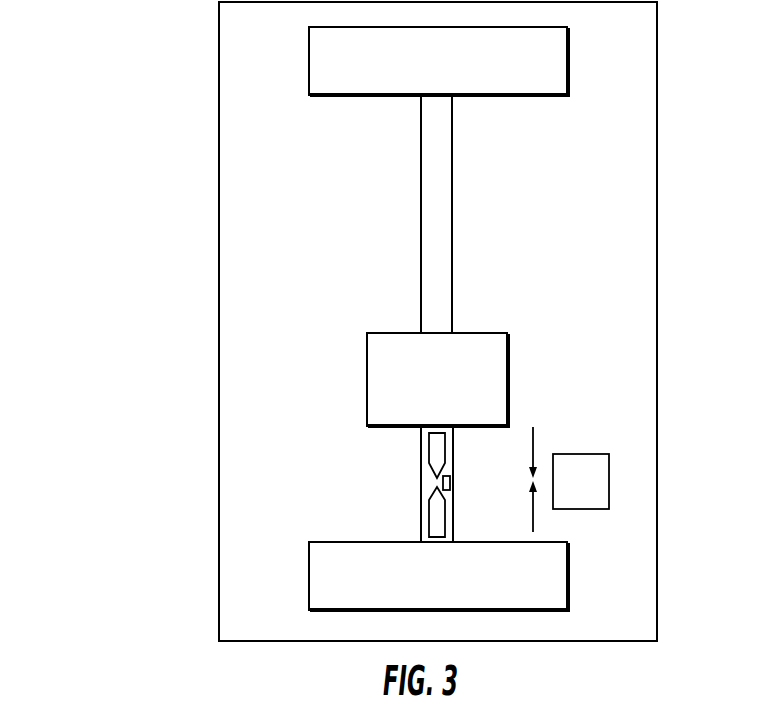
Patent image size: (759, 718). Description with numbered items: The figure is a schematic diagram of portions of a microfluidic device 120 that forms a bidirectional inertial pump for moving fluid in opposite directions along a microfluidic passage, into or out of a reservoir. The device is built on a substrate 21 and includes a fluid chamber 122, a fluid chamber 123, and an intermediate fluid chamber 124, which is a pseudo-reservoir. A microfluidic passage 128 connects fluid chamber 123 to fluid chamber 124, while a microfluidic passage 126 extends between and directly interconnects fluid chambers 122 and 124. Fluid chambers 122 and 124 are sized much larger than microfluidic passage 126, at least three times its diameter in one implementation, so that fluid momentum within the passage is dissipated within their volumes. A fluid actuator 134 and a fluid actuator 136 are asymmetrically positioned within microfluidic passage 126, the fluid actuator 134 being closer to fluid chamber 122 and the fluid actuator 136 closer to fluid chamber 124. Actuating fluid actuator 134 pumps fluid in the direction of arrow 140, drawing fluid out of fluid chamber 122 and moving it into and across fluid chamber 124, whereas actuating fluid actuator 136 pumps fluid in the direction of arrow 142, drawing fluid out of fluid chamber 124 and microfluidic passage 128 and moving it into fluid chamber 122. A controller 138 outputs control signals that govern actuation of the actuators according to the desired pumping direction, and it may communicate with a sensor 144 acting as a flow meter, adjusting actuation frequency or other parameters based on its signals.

The microfluidic device 120 is at (86, 98).
The substrate 21 is at (219, 320).
The fluid chamber 123 is at (567, 62).
The microfluidic passage 128 is at (452, 236).
The fluid chamber 124 is at (507, 375).
The microfluidic passage 126 is at (453, 456).
The fluid actuator 136 is at (433, 455).
The sensor 144 is at (450, 483).
The fluid actuator 134 is at (435, 505).
The arrow 142 is at (533, 432).
The arrow 140 is at (532, 515).
The controller 138 is at (609, 472).
The fluid chamber 122 is at (567, 582).